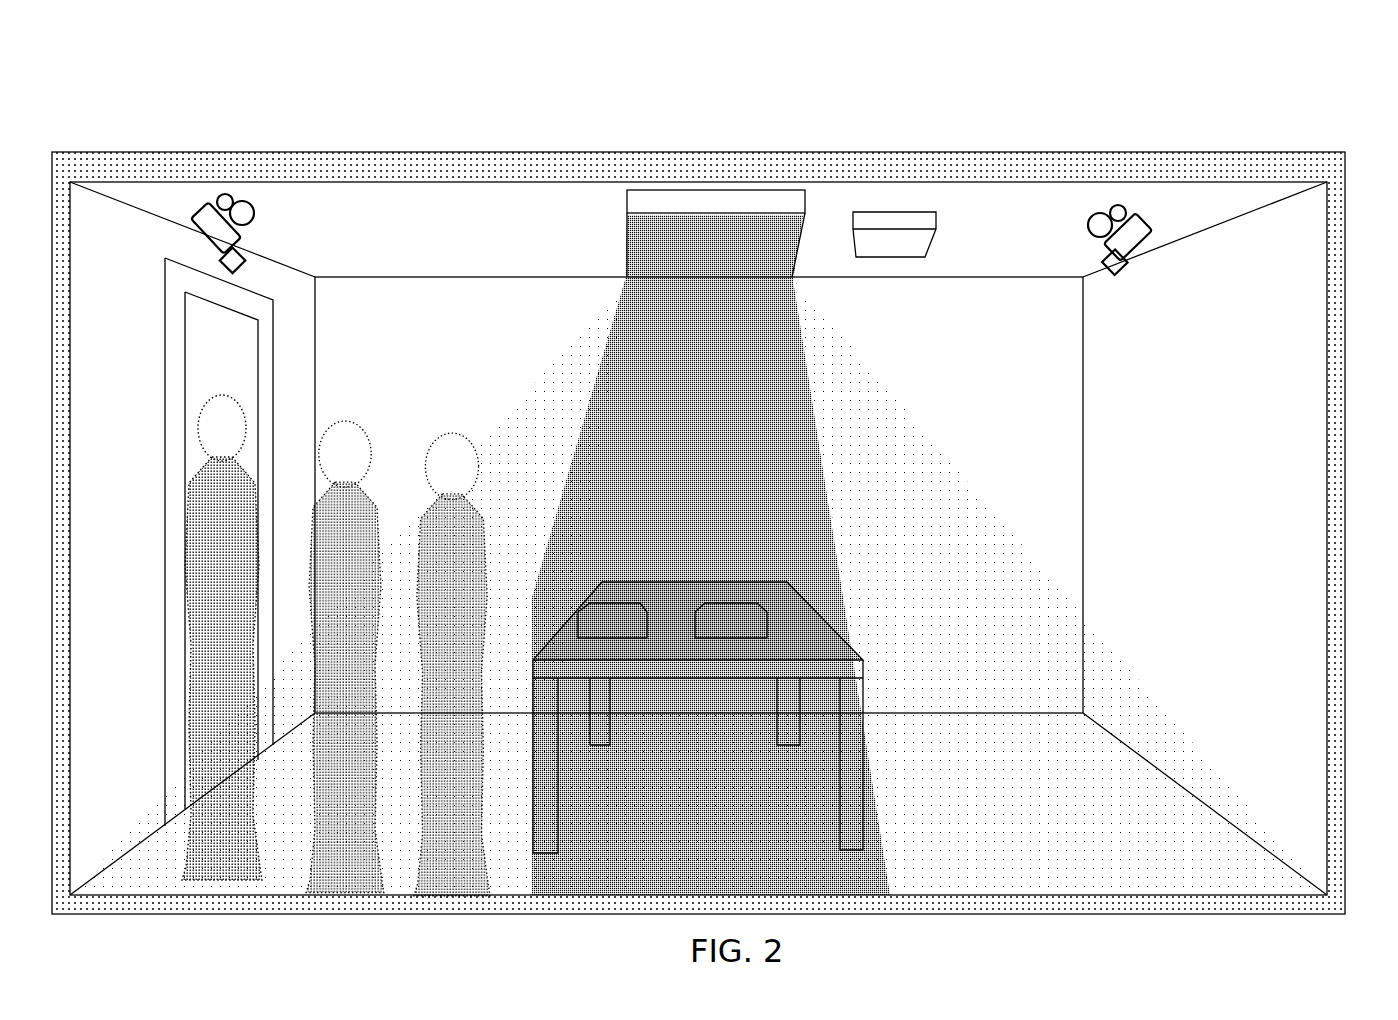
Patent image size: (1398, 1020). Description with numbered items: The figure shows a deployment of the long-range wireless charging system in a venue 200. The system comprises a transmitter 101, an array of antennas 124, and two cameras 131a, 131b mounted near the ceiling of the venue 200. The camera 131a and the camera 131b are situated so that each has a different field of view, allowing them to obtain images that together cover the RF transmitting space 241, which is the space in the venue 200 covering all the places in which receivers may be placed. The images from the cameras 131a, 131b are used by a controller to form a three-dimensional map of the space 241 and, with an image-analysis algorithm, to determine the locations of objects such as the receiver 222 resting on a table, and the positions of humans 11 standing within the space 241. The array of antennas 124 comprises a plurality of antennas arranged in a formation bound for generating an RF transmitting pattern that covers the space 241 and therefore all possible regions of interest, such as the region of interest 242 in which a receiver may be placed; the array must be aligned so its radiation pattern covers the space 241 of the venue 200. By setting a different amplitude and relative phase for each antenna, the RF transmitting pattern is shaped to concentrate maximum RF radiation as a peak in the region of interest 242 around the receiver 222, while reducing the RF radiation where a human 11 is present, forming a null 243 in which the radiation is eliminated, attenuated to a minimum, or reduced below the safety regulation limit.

The venue 200 is at (1306, 123).
The camera 131a is at (206, 250).
The camera 131b is at (1138, 262).
The array of antennas 124 is at (627, 203).
The transmitter 101 is at (936, 229).
The region of interest 242 is at (624, 322).
The RF transmitting space 241 is at (552, 360).
The humans 11 is at (455, 442).
The receiver 222 is at (640, 612).
The null 243 is at (517, 677).